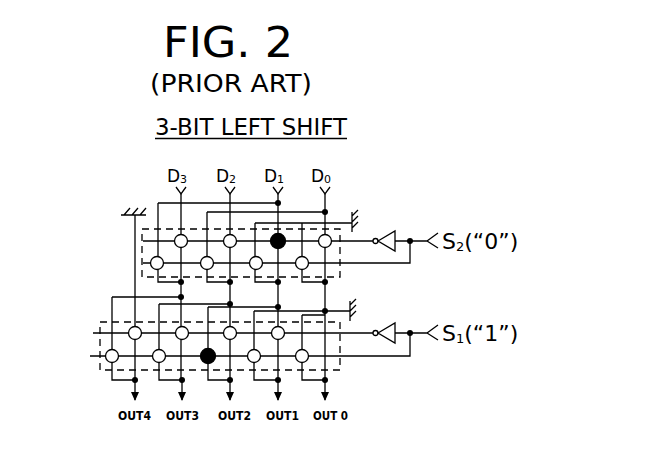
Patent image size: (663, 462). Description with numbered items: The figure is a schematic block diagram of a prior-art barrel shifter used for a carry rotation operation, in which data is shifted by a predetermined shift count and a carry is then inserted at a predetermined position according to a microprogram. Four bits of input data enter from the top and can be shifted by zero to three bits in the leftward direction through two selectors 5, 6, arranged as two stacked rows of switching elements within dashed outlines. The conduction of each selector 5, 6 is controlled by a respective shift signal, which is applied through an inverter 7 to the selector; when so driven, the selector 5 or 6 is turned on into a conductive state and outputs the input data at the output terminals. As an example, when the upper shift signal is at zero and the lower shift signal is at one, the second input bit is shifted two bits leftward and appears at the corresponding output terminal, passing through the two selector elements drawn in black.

The selector 5 is at (343, 276).
The selector 6 is at (341, 367).
The inverter 7 is at (385, 230).